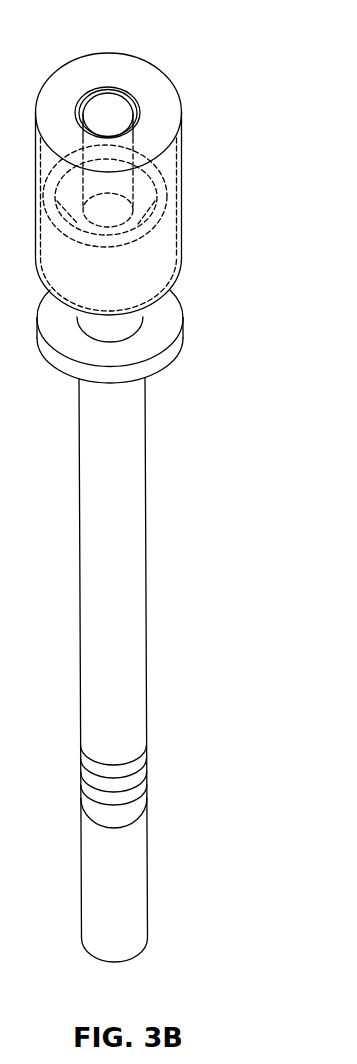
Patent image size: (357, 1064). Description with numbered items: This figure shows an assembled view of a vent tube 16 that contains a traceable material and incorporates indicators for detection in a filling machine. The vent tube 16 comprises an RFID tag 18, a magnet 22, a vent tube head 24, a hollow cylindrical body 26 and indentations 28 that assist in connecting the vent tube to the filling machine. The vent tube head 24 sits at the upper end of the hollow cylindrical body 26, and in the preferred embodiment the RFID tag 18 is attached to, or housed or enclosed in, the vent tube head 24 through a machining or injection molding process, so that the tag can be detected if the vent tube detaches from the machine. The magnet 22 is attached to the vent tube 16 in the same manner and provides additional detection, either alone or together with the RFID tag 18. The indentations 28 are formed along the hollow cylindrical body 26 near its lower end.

The vent tube 16 is at (214, 52).
The RFID tag 18 is at (163, 262).
The magnet 22 is at (160, 196).
The vent tube head 24 is at (172, 155).
The hollow cylindrical body 26 is at (142, 610).
The indentations 28 is at (144, 788).